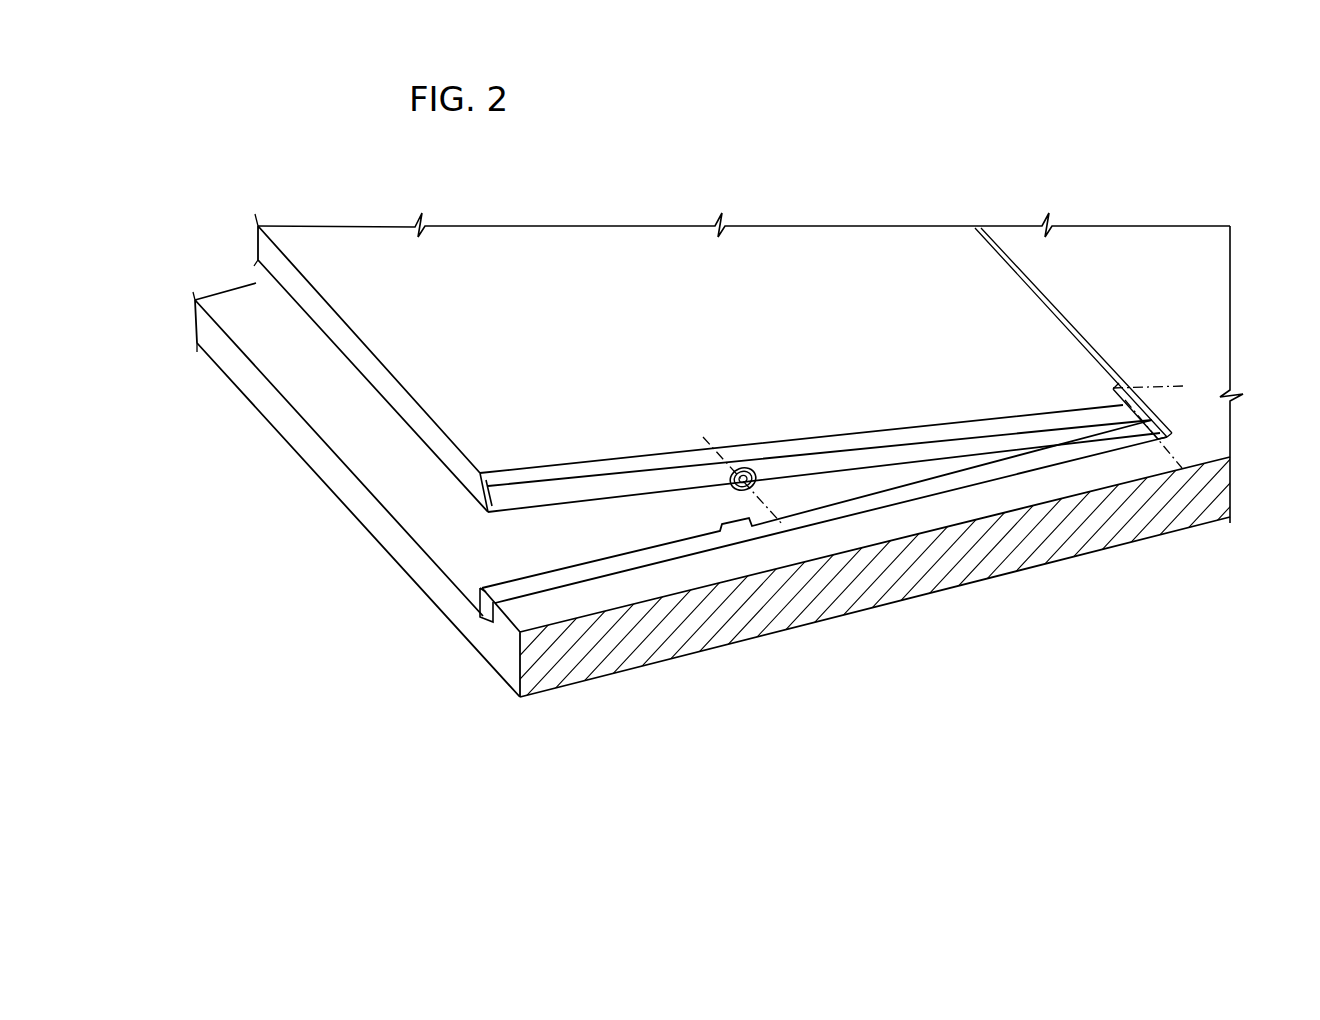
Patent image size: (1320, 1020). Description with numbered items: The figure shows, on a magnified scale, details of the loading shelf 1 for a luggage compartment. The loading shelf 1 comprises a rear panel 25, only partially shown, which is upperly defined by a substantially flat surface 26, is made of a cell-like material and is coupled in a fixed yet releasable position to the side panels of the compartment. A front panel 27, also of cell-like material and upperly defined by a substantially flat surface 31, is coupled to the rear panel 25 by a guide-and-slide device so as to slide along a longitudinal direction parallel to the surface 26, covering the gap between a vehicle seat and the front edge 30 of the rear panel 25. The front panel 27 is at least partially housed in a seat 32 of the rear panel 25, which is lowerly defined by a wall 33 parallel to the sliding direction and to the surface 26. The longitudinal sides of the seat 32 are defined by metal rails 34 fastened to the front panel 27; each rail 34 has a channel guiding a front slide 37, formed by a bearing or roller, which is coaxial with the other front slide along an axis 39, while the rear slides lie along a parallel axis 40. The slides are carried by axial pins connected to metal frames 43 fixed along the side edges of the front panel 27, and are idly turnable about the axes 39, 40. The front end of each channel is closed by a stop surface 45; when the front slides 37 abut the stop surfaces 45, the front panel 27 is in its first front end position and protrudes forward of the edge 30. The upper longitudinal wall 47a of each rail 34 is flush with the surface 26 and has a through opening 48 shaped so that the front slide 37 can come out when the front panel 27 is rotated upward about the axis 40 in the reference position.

The loading shelf 1 is at (956, 193).
The rear panel 25 is at (1202, 360).
The flat surface 26 is at (1125, 270).
The front panel 27 is at (858, 263).
The front edge 30 is at (330, 470).
The flat surface 31 is at (913, 262).
The seat 32 is at (403, 483).
The wall 33 is at (440, 548).
The rail 34 is at (495, 627).
The front slide 37 is at (756, 480).
The axis 39 is at (698, 414).
The axis 40 is at (1183, 384).
The frame 43 is at (880, 442).
The stop surface 45 is at (480, 600).
The longitudinal wall 47a is at (683, 550).
The through opening 48 is at (722, 510).